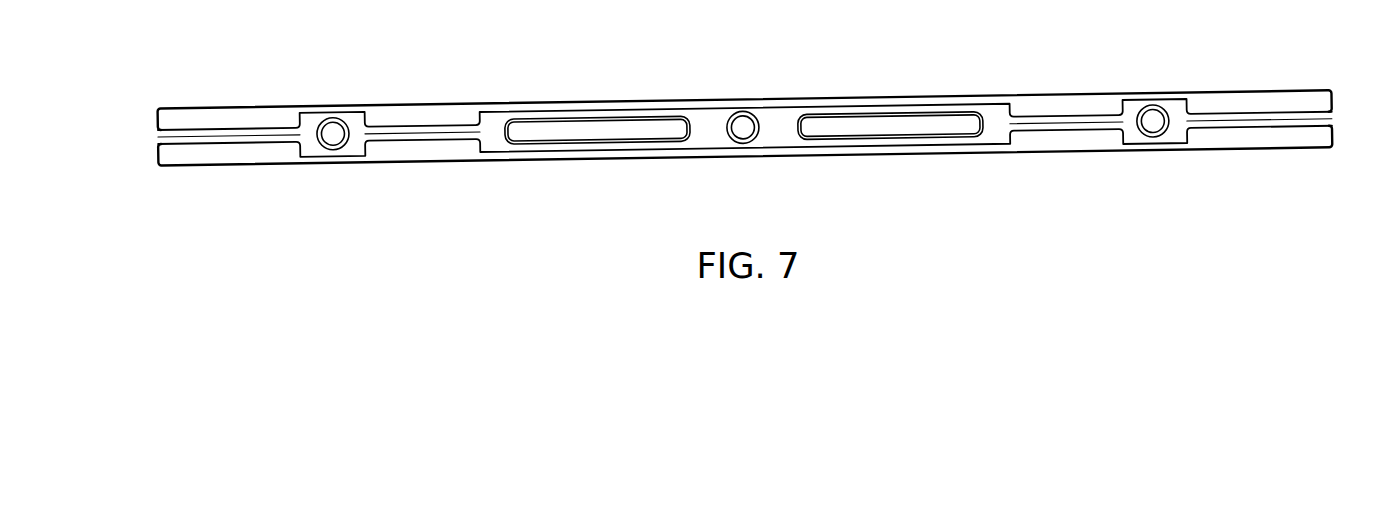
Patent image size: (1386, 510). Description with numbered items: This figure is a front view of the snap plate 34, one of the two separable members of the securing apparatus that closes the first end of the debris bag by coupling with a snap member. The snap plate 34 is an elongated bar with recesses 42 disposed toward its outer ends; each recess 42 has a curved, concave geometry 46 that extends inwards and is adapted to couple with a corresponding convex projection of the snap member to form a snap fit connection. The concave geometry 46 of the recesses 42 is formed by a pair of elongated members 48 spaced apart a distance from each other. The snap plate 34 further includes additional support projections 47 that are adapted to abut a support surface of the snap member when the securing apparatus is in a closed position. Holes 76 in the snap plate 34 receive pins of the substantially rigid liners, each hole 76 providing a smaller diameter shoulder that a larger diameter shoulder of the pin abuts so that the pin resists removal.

The snap plate 34 is at (744, 127).
The recess 42 is at (243, 150).
The concave geometry 46 is at (147, 137).
The support projection 47 is at (583, 137).
The elongated member 48 is at (177, 109).
The hole 76 is at (330, 112).